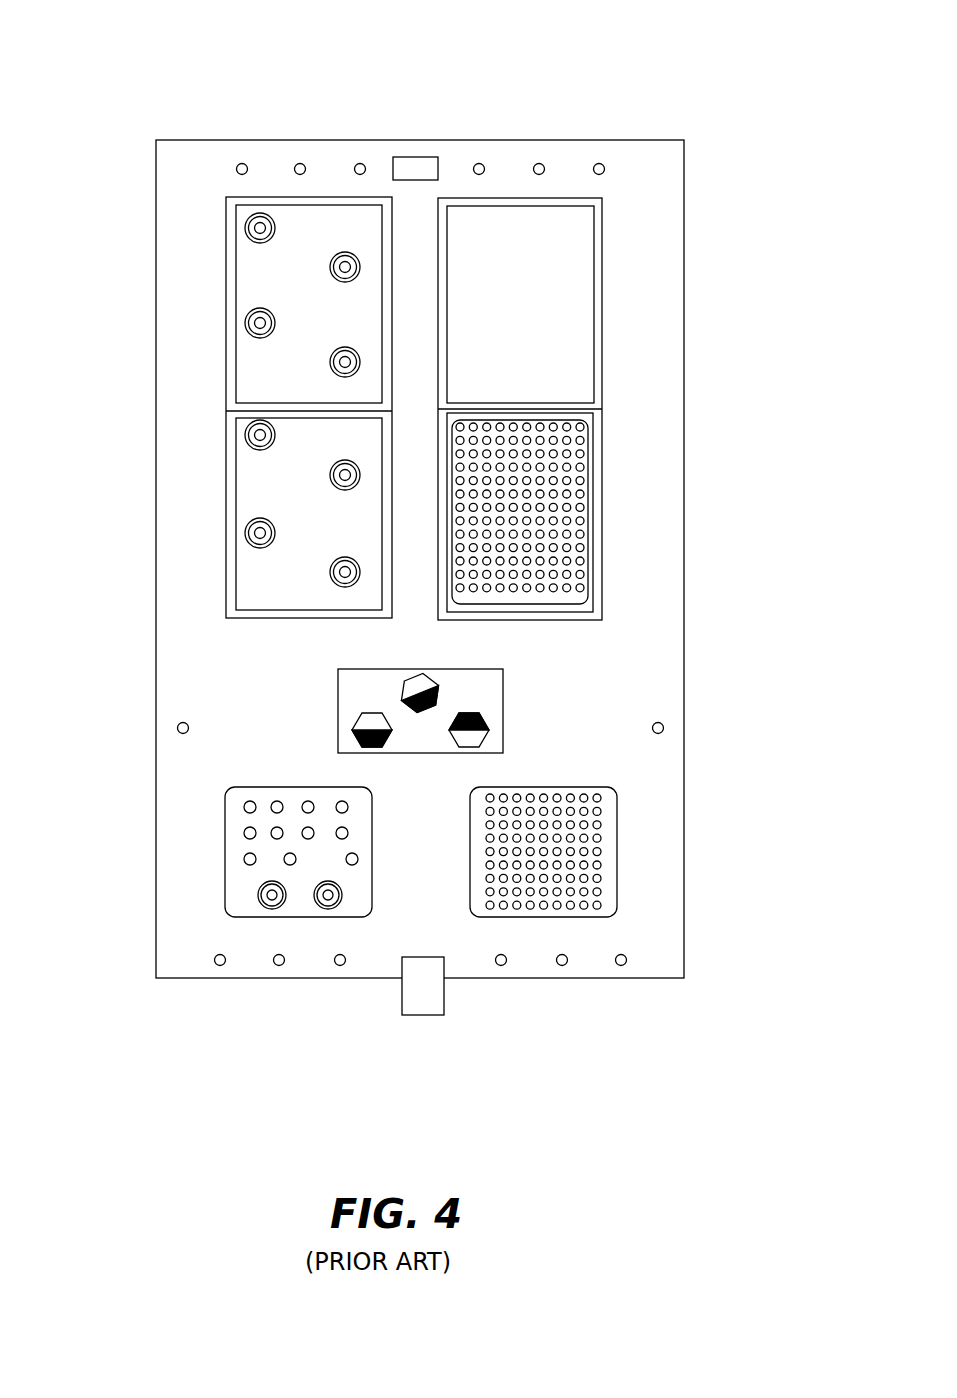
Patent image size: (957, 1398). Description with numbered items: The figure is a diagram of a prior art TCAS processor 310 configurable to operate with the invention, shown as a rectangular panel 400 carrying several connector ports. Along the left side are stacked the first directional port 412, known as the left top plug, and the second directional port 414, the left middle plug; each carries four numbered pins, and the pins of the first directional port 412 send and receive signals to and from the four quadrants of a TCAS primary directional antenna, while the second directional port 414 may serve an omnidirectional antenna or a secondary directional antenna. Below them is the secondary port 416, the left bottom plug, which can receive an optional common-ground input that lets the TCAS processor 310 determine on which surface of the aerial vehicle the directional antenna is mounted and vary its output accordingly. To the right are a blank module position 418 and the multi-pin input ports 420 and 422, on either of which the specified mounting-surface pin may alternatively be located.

The prior art patch panel assembly 400 is at (112, 134).
The TCAS processor 310 is at (680, 250).
The first directional port 412 is at (226, 274).
The second directional port 414 is at (226, 493).
The secondary port 416 is at (225, 822).
The blank module slot 418 is at (603, 331).
The input port 420 is at (605, 563).
The input port 422 is at (618, 828).